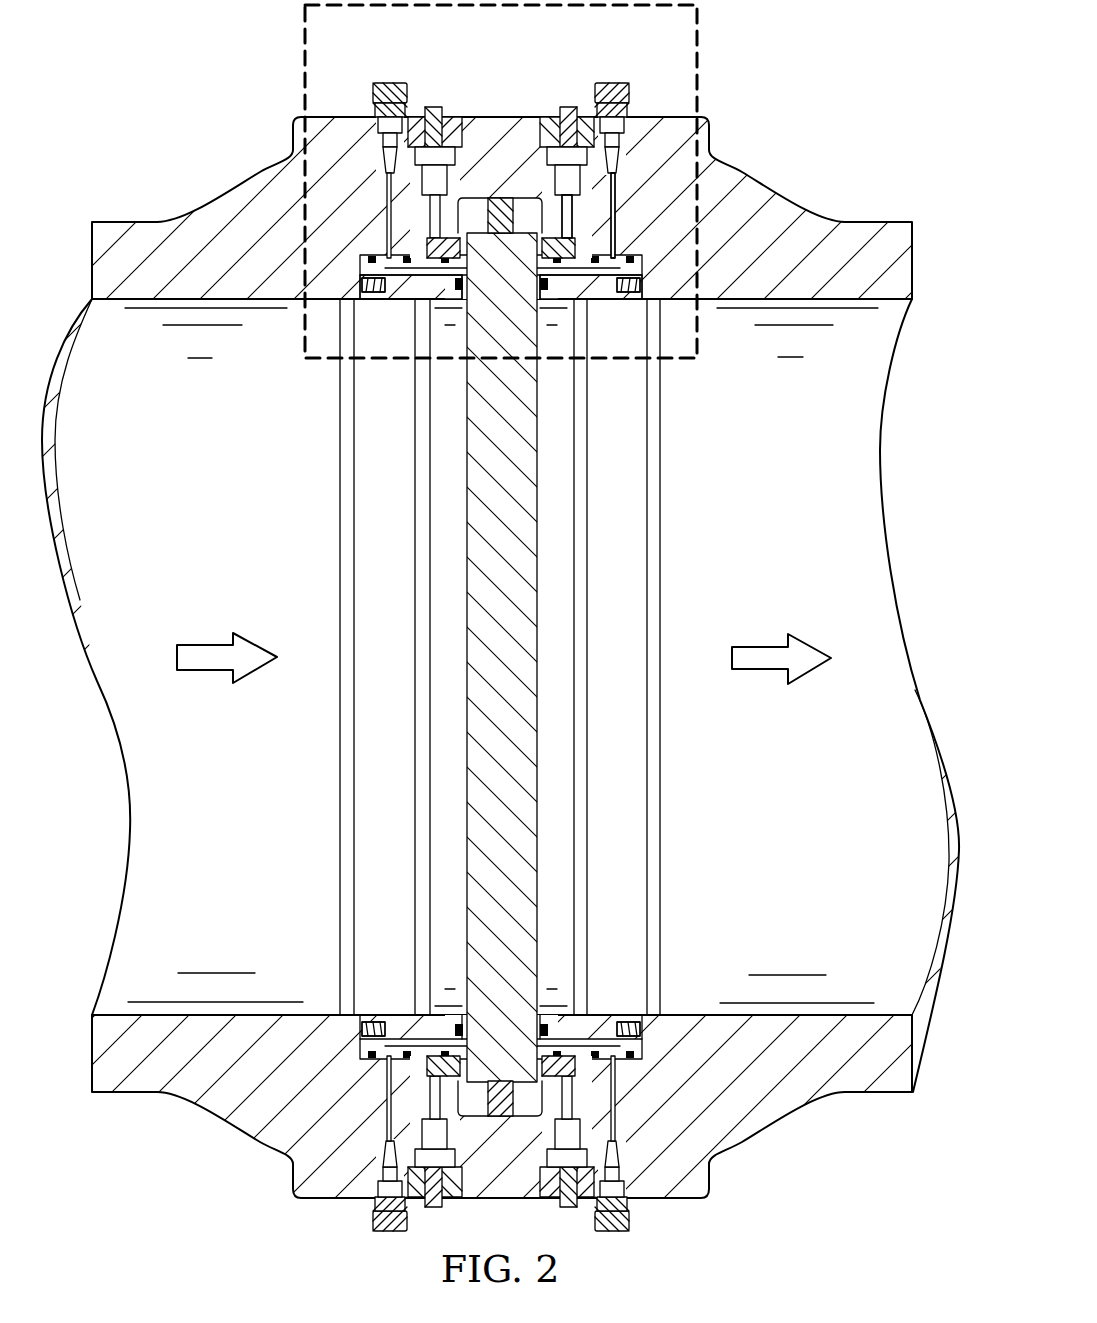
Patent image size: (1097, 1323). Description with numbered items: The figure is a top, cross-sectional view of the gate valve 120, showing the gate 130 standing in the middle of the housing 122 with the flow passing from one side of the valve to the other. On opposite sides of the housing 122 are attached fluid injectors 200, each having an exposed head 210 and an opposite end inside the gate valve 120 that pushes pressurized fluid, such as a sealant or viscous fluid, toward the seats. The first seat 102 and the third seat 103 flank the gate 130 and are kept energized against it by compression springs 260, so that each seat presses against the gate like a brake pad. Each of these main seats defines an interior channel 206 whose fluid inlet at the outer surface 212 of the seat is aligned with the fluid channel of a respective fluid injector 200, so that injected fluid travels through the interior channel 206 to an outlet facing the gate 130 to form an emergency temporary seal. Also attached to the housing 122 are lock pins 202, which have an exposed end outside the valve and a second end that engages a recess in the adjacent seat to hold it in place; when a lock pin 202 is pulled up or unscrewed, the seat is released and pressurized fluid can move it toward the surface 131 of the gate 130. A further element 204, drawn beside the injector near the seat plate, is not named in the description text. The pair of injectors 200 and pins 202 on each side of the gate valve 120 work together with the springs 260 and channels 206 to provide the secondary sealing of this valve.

The gate valve 120 is at (243, 1133).
The housing 122 is at (348, 116).
The gate 130 is at (525, 455).
The surface of the gate 131 is at (465, 508).
The first seat 102 is at (393, 295).
The third seat 103 is at (645, 250).
The interior channel 206 is at (624, 295).
The compression spring 260 is at (353, 285).
The fluid injector 200 is at (390, 82).
The lock pin 202 is at (568, 107).
The outer surface of the first seat 212 is at (455, 116).
The head 210 is at (573, 238).
The sensor lead 204 is at (618, 227).